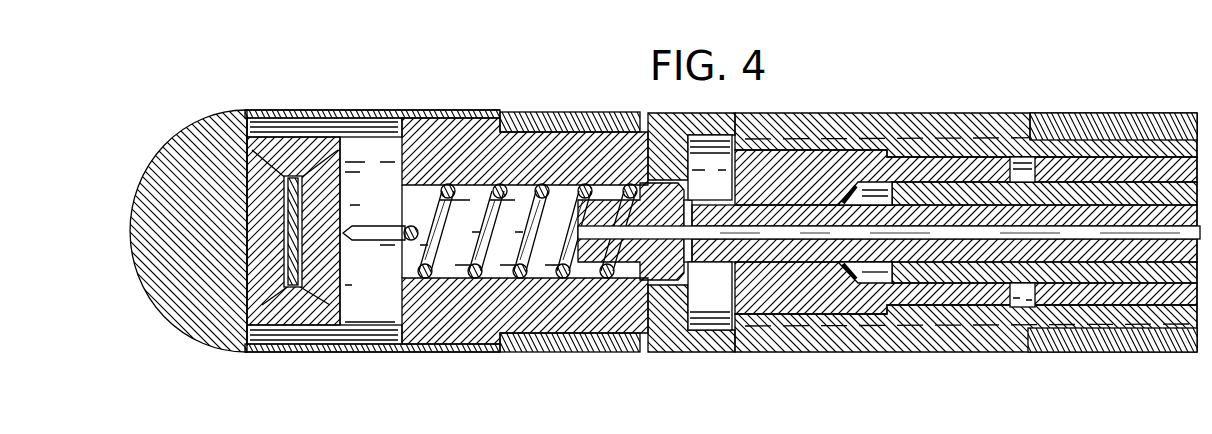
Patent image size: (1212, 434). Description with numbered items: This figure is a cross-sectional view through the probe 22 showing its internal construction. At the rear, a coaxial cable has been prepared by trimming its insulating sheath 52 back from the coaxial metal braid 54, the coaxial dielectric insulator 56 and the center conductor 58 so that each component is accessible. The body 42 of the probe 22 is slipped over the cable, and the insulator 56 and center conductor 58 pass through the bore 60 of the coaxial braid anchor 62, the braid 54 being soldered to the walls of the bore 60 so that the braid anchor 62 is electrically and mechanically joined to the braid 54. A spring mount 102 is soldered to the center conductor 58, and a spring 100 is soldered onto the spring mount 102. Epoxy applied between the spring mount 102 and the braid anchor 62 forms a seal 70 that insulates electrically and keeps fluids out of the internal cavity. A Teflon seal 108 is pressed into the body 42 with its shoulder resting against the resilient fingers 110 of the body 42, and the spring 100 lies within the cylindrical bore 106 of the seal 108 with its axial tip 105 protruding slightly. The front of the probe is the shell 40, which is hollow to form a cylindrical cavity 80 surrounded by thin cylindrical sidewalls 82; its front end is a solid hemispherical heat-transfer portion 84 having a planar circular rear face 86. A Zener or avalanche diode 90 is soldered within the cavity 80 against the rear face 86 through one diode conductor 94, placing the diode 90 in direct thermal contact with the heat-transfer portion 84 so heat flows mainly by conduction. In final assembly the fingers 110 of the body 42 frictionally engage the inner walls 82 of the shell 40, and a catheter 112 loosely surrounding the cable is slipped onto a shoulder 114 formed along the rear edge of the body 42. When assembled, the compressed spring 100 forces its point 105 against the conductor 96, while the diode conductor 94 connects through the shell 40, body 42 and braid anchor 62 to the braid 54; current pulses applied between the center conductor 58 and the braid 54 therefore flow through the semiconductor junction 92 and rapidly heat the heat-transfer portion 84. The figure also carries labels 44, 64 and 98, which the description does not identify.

The probe 22 is at (537, 92).
The shell 40 is at (440, 118).
The body 42 is at (928, 113).
The inner tube 44 is at (842, 133).
The insulating sheath 52 is at (1078, 300).
The coaxial metal braid 54 is at (935, 287).
The coaxial dielectric insulator 56 is at (730, 210).
The center conductor 58 is at (581, 221).
The bore 60 is at (890, 310).
The coaxial braid anchor 62 is at (805, 320).
The innermost tube 64 is at (980, 297).
The seal 70 is at (700, 303).
The cylindrical cavity 80 is at (358, 307).
The cylindrical sidewalls 82 is at (381, 352).
The heat-transfer portion 84 is at (150, 210).
The rear face 86 is at (247, 292).
The diode 90 is at (298, 346).
The semiconductor junction 92 is at (343, 187).
The diode conductor 94 is at (247, 240).
The conductor 96 is at (333, 264).
The pin 98 is at (296, 137).
The spring 100 is at (437, 242).
The spring mount 102 is at (578, 262).
The axial tip 105 is at (346, 227).
The cylindrical bore 106 is at (408, 266).
The Teflon seal 108 is at (447, 344).
The resilient fingers 110 is at (535, 352).
The catheter 112 is at (1070, 113).
The shoulder 114 is at (1144, 140).